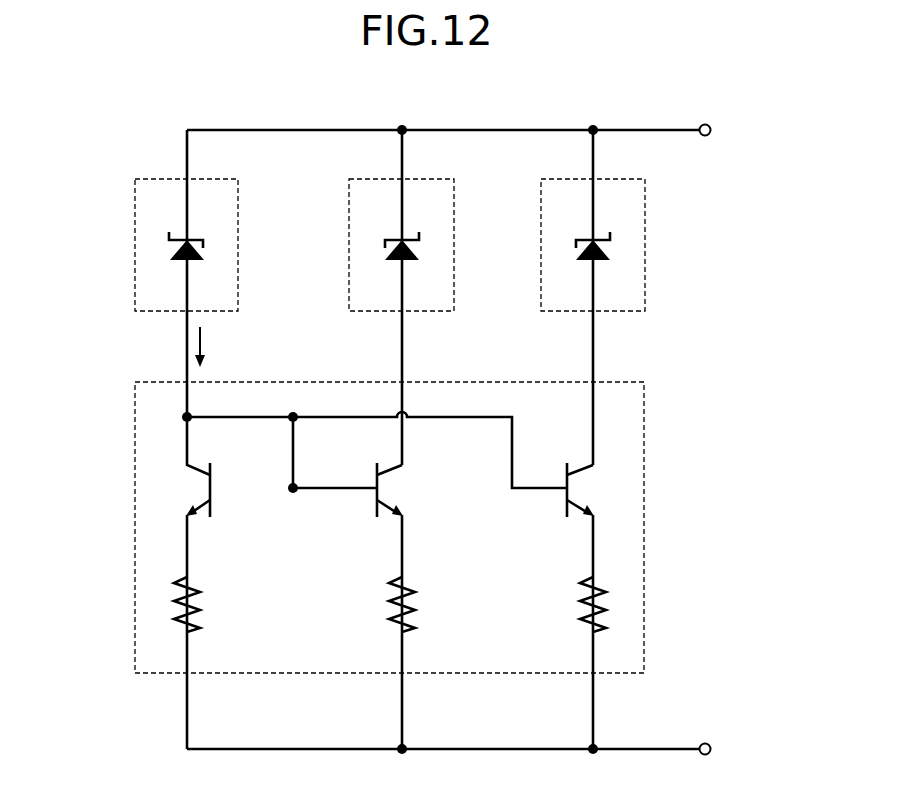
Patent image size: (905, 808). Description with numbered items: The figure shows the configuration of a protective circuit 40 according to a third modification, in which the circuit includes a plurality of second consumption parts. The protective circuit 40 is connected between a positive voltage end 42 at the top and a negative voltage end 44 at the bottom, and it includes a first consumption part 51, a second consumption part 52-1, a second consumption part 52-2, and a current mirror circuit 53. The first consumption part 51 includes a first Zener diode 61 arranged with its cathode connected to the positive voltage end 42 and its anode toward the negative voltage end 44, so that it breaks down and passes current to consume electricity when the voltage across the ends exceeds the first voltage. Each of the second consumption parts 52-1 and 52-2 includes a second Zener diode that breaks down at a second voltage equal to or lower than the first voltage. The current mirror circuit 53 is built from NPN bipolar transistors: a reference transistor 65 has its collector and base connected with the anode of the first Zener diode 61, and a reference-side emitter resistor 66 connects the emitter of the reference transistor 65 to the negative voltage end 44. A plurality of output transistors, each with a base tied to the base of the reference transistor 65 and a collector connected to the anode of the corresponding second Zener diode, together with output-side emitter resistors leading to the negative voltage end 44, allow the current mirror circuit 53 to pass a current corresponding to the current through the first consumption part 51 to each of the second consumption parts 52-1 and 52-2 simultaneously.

The protective circuit 40 is at (93, 128).
The positive voltage end 42 is at (711, 130).
The negative voltage end 44 is at (711, 749).
The first consumption part 51 is at (219, 178).
The second consumption part 52-1 is at (431, 178).
The second consumption part 52-2 is at (623, 178).
The current mirror circuit 53 is at (624, 381).
The first Zener diode 61 is at (204, 257).
The reference transistor 65 is at (214, 497).
The reference-side emitter resistor 66 is at (200, 609).